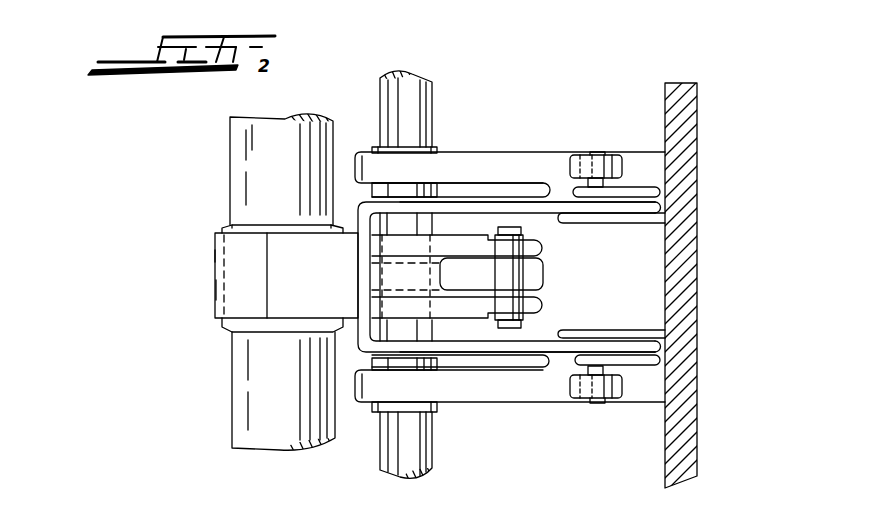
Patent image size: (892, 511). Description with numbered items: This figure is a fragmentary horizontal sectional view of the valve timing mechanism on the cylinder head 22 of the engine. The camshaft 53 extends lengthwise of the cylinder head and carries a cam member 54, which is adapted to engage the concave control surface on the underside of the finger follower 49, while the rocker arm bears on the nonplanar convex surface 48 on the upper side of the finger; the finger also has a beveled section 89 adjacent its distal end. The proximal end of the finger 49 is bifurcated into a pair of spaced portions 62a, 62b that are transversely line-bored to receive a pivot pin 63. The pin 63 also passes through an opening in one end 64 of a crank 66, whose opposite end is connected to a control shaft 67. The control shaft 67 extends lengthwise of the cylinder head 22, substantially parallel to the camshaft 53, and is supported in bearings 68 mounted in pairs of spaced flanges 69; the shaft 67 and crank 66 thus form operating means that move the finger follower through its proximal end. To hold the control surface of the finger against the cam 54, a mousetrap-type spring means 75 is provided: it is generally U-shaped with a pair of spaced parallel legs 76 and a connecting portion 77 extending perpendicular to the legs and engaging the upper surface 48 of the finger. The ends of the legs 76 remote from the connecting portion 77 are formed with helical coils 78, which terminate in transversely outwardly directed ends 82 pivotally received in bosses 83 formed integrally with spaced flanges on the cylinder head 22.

The cylinder head 22 is at (704, 114).
The convex surface 48 is at (326, 301).
The finger follower 49 is at (208, 250).
The camshaft 53 is at (244, 398).
The cam member 54 is at (258, 228).
The spaced portion 62a is at (544, 306).
The spaced portion 62b is at (544, 243).
The pivot pin 63 is at (509, 229).
The end of crank 64 is at (546, 273).
The crank 66 is at (480, 289).
The control shaft 67 is at (410, 78).
The bearing 68 is at (438, 150).
The flange 69 is at (540, 154).
The spring means 75 is at (498, 194).
The leg 76 is at (458, 212).
The connecting portion 77 is at (359, 248).
The helical coil 78 is at (616, 279).
The outwardly directed end 82 is at (596, 152).
The boss 83 is at (618, 157).
The beveled section 89 is at (234, 287).